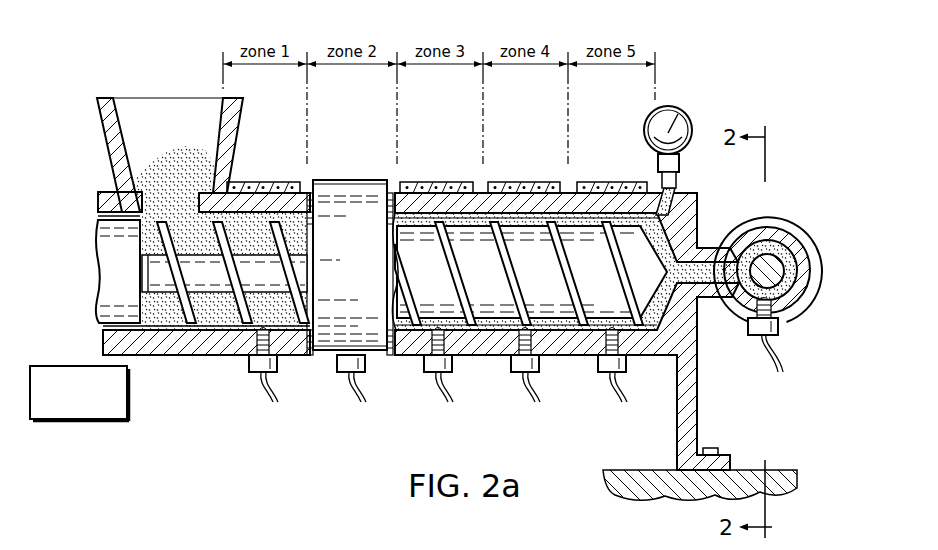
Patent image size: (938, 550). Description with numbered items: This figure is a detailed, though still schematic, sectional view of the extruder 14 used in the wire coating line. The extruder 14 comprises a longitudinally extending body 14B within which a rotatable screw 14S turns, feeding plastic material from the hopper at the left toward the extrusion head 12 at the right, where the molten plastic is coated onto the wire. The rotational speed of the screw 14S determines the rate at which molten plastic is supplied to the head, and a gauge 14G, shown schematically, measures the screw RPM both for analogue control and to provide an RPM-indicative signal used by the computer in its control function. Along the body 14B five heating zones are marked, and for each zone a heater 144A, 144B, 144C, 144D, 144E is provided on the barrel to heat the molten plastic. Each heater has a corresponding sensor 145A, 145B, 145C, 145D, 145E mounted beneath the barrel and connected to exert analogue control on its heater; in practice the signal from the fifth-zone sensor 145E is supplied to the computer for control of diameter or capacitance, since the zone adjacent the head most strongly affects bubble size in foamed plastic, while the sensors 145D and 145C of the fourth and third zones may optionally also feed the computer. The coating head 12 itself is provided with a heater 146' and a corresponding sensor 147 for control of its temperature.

The extrusion head 12 is at (801, 280).
The extruder 14 is at (187, 378).
The body 14B is at (227, 358).
The rotatable screw 14S is at (202, 271).
The gauge 14G is at (57, 421).
The heater 144A is at (236, 183).
The heater 144B is at (322, 196).
The heater 144C is at (408, 183).
The heater 144D is at (496, 183).
The heater 144E is at (582, 183).
The sensor 145A is at (260, 372).
The sensor 145B is at (346, 374).
The sensor 145C is at (431, 374).
The sensor 145D is at (517, 374).
The sensor 145E is at (602, 374).
The heater 146' is at (783, 255).
The sensor 147 is at (779, 331).